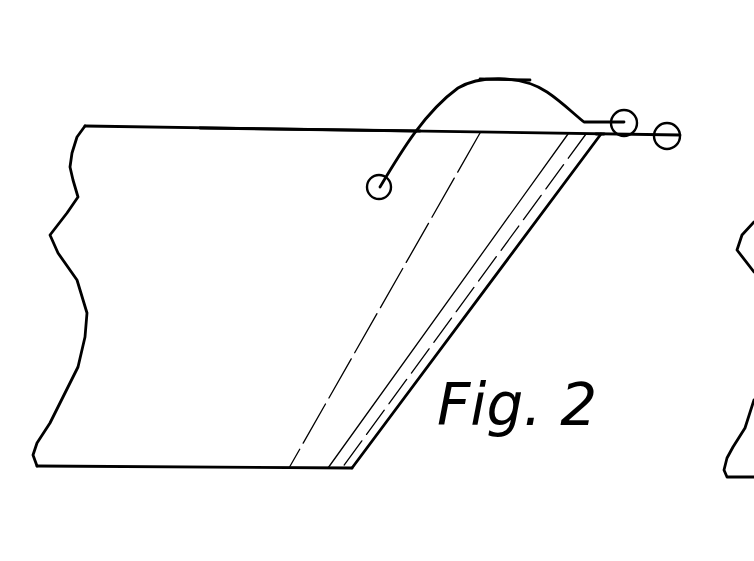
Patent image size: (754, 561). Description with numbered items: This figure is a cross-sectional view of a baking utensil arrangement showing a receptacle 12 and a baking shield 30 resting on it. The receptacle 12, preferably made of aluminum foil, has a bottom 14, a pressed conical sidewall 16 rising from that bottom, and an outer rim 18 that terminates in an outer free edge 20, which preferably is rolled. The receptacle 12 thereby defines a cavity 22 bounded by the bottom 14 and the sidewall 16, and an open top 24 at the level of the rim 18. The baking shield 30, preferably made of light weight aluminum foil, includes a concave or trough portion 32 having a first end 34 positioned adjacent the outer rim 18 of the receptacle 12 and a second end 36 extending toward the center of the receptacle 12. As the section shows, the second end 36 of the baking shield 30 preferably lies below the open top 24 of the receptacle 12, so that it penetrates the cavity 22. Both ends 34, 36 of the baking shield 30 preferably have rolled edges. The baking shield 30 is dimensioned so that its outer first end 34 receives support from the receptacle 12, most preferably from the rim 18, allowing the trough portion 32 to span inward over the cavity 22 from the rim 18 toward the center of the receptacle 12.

The receptacle 12 is at (502, 272).
The bottom 14 is at (148, 465).
The pressed conical sidewall 16 is at (462, 322).
The outer rim 18 is at (606, 138).
The outer free edge 20 is at (671, 124).
The cavity 22 is at (225, 155).
The open top 24 is at (300, 130).
The baking shield 30 is at (462, 81).
The trough portion 32 is at (522, 80).
The first end 34 is at (622, 109).
The second end 36 is at (366, 194).